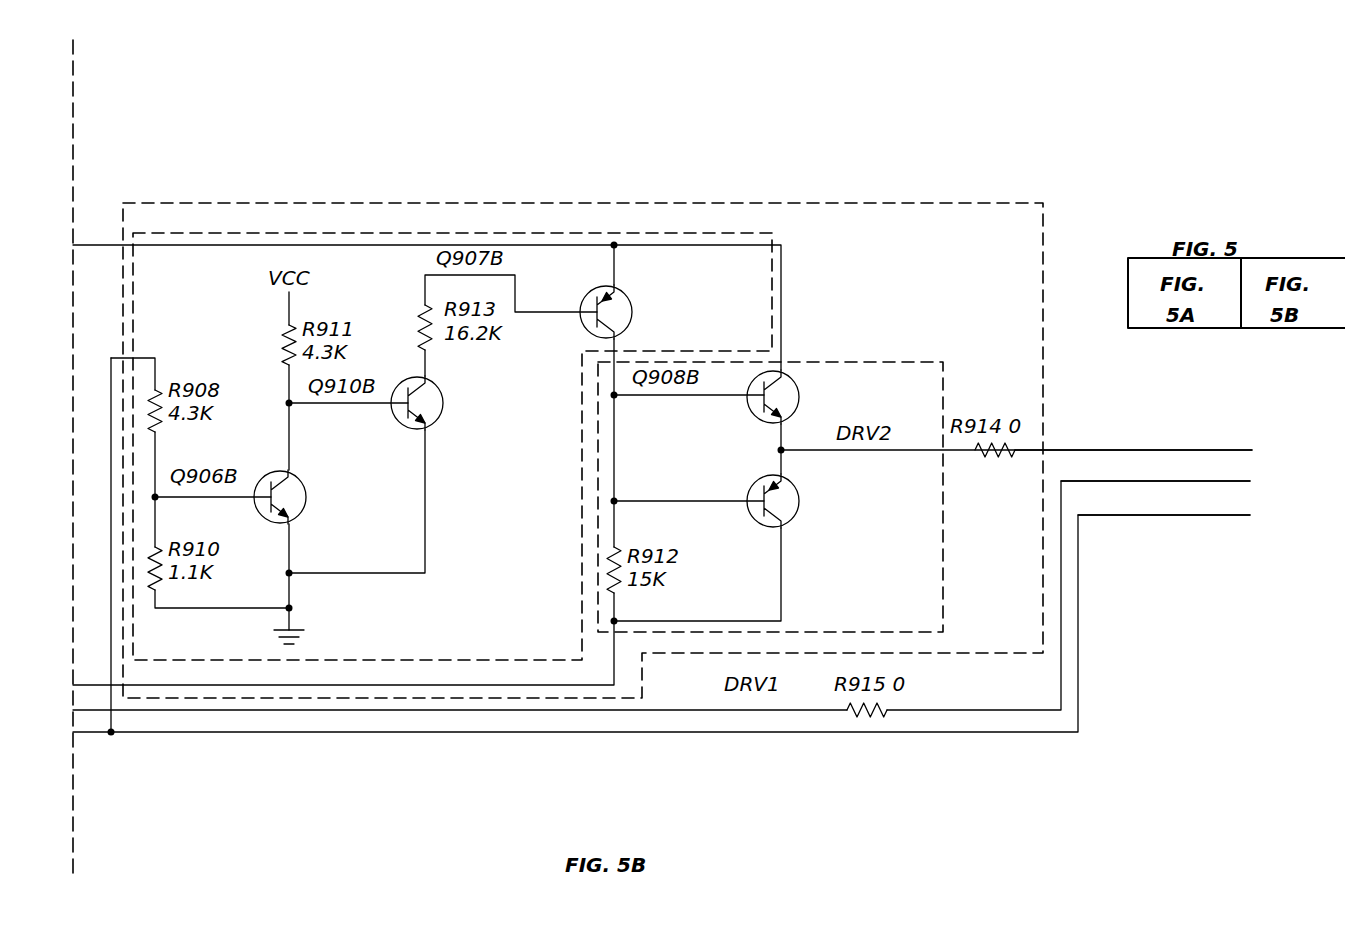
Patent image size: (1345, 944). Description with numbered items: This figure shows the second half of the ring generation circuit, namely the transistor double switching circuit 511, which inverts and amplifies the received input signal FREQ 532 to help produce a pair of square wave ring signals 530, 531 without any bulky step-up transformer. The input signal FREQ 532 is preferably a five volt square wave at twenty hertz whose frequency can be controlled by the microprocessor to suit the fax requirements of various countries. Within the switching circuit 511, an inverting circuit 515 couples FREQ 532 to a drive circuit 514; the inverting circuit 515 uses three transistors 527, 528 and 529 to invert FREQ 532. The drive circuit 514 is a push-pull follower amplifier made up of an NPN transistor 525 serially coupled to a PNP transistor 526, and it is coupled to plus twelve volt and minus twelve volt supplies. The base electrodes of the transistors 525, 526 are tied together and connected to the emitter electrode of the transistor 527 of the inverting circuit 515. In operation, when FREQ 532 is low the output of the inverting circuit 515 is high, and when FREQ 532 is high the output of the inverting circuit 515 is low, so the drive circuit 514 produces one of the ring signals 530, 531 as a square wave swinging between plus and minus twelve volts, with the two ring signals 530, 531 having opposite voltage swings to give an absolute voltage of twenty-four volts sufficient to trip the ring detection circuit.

The switching circuit 511 is at (895, 203).
The drive circuit 514 is at (828, 360).
The inverting circuit 515 is at (632, 230).
The NPN transistor 525 is at (762, 420).
The PNP transistor 526 is at (778, 530).
The transistor 527 is at (590, 300).
The transistor 528 is at (392, 418).
The transistor 529 is at (258, 510).
The ring signal 530 is at (1180, 481).
The ring signal 531 is at (1233, 450).
The input signal FREQ 532 is at (1218, 515).